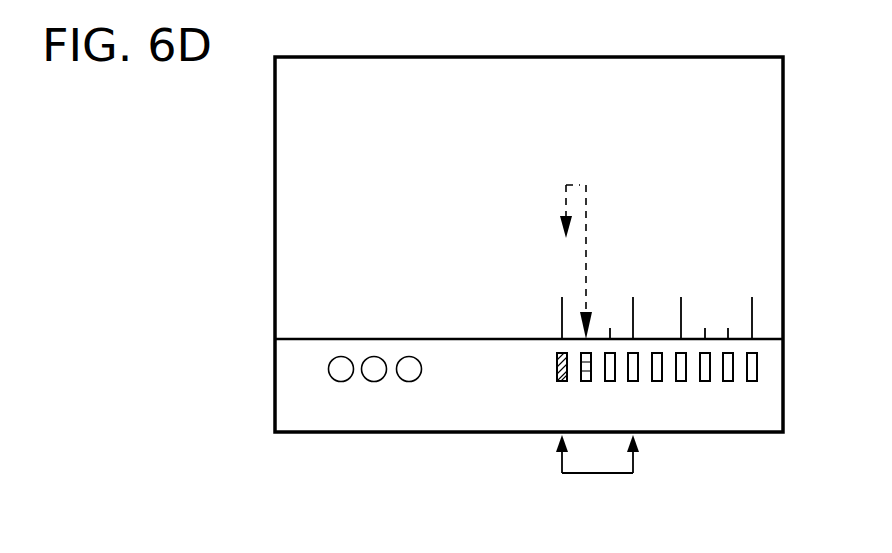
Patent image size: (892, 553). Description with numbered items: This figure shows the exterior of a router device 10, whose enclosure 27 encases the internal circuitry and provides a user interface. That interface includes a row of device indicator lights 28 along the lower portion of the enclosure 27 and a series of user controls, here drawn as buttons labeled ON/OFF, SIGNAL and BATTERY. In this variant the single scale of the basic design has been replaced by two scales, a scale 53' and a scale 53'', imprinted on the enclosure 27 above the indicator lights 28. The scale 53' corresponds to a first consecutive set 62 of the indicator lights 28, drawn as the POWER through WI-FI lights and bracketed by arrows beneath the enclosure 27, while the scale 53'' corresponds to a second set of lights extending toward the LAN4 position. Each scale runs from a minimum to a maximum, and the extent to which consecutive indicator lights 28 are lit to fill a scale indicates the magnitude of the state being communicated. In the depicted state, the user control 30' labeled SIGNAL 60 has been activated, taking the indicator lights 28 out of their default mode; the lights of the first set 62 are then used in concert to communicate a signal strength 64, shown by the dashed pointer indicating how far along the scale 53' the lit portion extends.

The router device 10 is at (428, 56).
The enclosure 27 is at (785, 128).
The indicator lights 28 is at (683, 452).
The user control 30' is at (354, 425).
The scale 53' is at (556, 290).
The scale 53'' is at (699, 265).
The SIGNAL label 60 is at (366, 352).
The first consecutive set of indicator lights 62 is at (597, 473).
The signal strength 64 is at (580, 185).